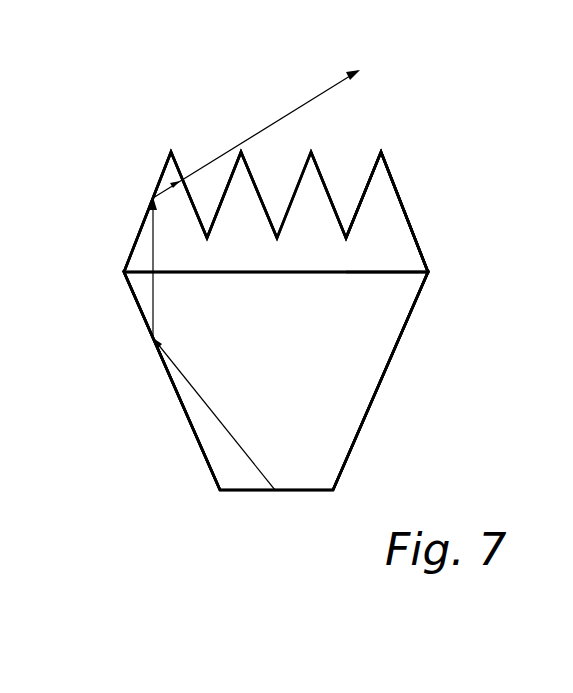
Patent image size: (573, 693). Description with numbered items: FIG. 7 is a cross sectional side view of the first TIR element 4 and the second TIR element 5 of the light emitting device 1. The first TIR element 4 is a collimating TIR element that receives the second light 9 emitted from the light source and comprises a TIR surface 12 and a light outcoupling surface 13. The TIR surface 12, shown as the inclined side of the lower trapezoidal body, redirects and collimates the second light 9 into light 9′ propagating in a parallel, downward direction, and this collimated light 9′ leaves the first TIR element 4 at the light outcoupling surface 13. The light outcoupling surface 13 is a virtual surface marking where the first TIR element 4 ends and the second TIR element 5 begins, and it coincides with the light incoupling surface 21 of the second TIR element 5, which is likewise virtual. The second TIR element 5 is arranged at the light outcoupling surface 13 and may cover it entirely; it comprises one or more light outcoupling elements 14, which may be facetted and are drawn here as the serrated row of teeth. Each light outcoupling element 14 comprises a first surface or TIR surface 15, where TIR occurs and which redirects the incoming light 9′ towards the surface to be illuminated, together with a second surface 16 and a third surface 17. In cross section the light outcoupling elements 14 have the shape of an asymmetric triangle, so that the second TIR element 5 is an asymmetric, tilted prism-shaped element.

The light emitting device 1 is at (260, 510).
The first TIR element 4 is at (298, 369).
The second TIR element 5 is at (426, 166).
The second light 9 is at (228, 435).
The collimated and redirected light 9′ is at (152, 290).
The TIR surface 12 is at (168, 380).
The light outcoupling surface 13 is at (385, 273).
The light outcoupling elements 14 is at (168, 125).
The first surface or TIR surface 15 is at (134, 245).
The second surface 16 is at (410, 228).
The third surface 17 is at (399, 251).
The light incoupling surface 21 is at (233, 272).